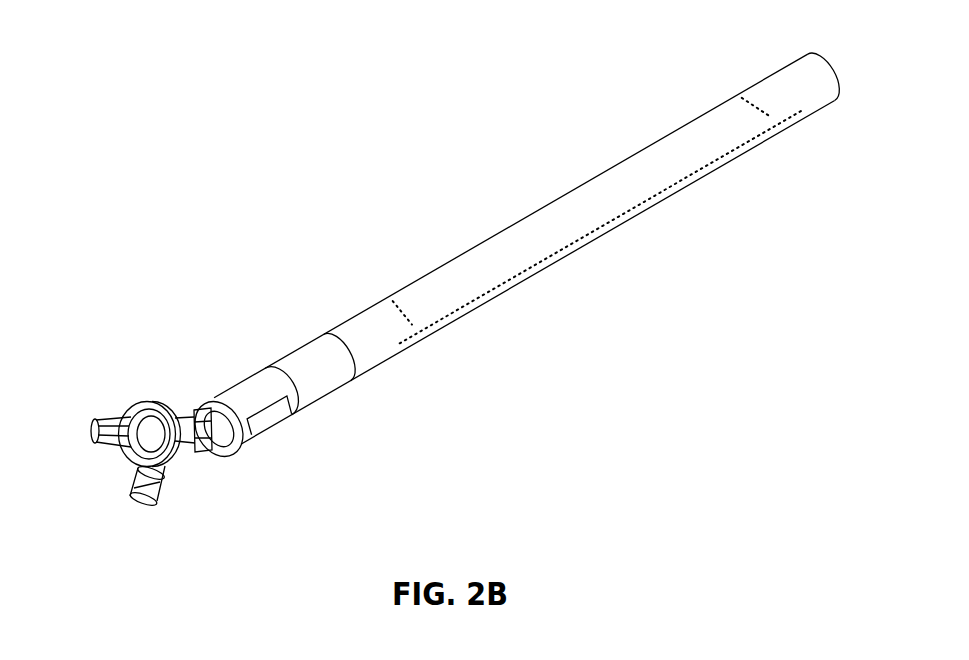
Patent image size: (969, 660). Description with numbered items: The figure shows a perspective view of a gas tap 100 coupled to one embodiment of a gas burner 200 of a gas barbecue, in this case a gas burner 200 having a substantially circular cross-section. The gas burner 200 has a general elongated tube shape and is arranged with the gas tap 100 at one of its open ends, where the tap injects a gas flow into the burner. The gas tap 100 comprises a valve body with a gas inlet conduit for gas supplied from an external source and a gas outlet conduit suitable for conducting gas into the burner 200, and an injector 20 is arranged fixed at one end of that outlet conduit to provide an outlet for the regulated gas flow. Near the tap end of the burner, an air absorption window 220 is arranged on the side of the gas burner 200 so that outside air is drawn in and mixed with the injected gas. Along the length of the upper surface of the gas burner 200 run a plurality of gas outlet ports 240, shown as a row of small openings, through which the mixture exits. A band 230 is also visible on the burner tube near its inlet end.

The gas tap 100 is at (148, 397).
The injector 20 is at (212, 413).
The gas burner 200 is at (542, 158).
The air absorption window 220 is at (268, 418).
The band 230 is at (312, 357).
The gas outlet ports 240 is at (533, 267).